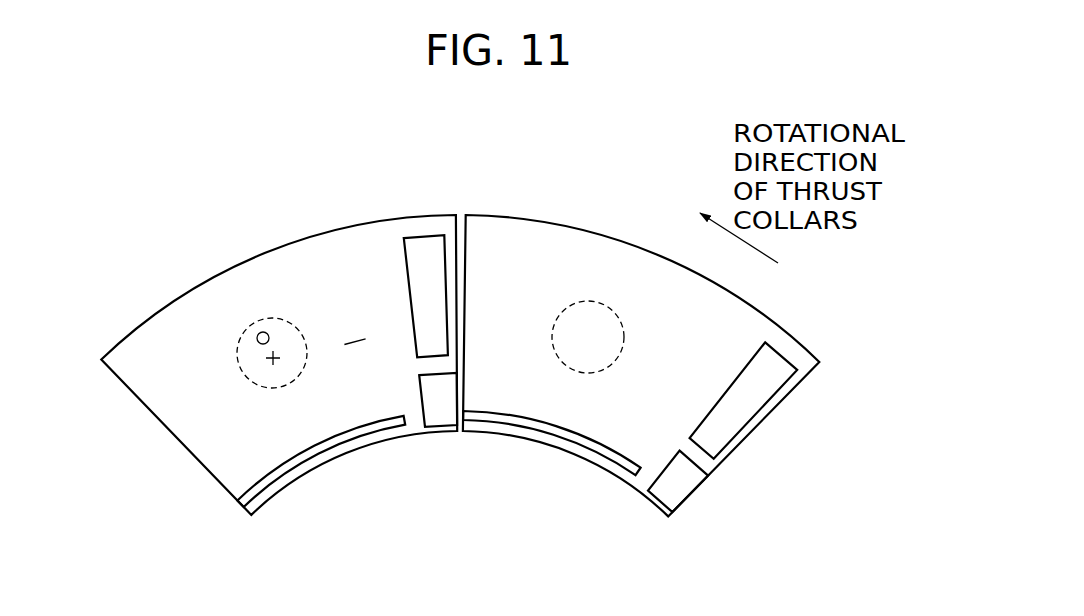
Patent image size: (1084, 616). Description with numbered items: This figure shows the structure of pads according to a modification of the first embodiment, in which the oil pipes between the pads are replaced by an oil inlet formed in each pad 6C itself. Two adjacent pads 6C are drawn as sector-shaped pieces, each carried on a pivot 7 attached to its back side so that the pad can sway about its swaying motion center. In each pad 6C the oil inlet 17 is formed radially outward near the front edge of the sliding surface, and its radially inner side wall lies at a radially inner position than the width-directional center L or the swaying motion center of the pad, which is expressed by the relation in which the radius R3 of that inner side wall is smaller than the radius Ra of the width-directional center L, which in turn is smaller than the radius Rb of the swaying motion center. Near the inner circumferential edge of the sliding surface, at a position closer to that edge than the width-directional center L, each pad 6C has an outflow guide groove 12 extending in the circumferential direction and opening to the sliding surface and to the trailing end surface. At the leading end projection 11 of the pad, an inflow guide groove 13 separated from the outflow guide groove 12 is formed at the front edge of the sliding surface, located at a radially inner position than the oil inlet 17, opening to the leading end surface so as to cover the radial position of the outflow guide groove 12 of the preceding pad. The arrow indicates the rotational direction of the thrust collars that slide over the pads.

The pad 6C is at (207, 278).
The pivot 7 is at (283, 323).
The leading end projection 11 is at (498, 410).
The outflow guide groove 12 is at (270, 477).
The inflow guide groove 13 is at (437, 418).
The oil inlet 17 is at (428, 243).
The radius of width-directional center Ra is at (355, 342).
The radius of swaying motion center Rb is at (273, 358).
The radius of inner side wall of oil inlet R3 is at (443, 362).
The width-directional center L is at (366, 344).